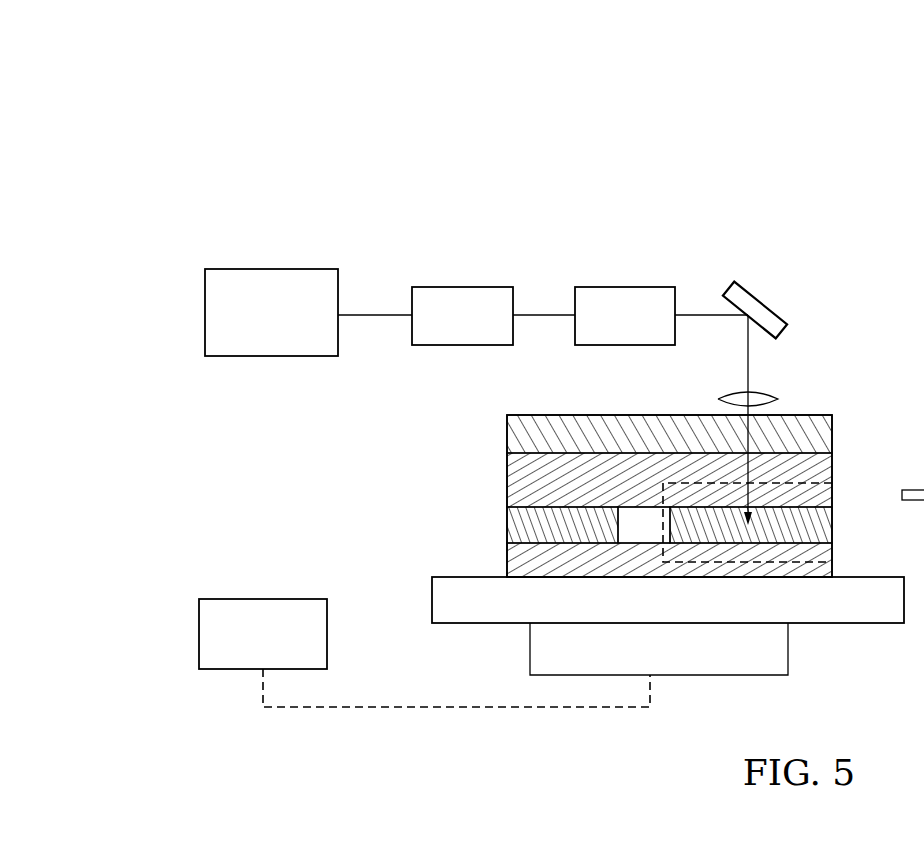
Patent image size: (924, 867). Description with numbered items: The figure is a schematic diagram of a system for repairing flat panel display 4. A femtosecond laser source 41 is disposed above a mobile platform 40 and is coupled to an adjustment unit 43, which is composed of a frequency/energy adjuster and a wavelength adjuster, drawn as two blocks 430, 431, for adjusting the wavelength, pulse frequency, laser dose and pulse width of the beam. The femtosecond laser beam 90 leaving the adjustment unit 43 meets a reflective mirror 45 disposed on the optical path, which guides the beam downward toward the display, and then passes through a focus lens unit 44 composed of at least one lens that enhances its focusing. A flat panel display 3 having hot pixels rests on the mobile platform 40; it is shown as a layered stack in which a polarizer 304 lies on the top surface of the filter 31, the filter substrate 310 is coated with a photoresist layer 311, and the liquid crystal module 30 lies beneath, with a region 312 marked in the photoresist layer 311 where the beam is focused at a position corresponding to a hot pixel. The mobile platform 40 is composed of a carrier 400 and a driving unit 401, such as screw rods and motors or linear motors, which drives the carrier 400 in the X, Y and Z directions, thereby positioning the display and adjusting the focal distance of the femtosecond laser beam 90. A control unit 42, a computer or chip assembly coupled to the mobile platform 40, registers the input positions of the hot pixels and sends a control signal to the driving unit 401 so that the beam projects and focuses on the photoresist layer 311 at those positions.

The system for repairing flat panel display 4 is at (230, 181).
The femtosecond laser source 41 is at (270, 269).
The adjustment unit 43 is at (655, 237).
The beam expander 430 is at (457, 292).
The attenuator 431 is at (617, 292).
The reflective mirror 45 is at (785, 322).
The femtosecond laser beam 90 is at (752, 377).
The focus lens unit 44 is at (773, 398).
The flat panel display 3 is at (494, 408).
The polarizer 304 is at (827, 432).
The filter 31 is at (495, 448).
The substrate 310 is at (828, 468).
The photoresist layer 311 is at (507, 517).
The opening 312 is at (634, 515).
The liquid crystal module 30 is at (495, 546).
The mobile platform 40 is at (421, 594).
The carrier 400 is at (505, 610).
The driving unit 401 is at (530, 658).
The control unit 42 is at (210, 621).